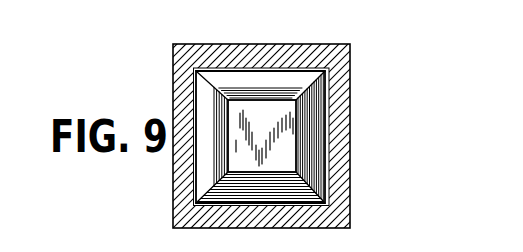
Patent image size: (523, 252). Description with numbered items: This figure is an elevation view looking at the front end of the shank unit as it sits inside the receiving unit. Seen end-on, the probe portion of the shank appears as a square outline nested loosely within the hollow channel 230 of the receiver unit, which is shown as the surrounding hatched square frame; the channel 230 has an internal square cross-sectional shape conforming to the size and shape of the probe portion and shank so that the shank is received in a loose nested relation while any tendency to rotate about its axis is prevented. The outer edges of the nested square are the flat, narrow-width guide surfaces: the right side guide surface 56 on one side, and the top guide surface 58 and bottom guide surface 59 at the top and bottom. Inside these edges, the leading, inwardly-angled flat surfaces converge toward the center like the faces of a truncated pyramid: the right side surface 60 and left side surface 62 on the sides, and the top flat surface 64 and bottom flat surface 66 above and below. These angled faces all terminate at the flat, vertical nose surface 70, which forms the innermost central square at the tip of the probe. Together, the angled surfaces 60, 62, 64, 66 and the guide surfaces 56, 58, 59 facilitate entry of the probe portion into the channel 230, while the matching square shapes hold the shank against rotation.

The right side guide surface 56 is at (200, 82).
The top guide surface 58 is at (243, 69).
The bottom guide surface 59 is at (254, 205).
The right side surface 60 is at (212, 117).
The left side surface 62 is at (304, 155).
The top flat surface 64 is at (275, 83).
The bottom flat surface 66 is at (283, 188).
The nose surface 70 is at (268, 125).
The hollow channel 230 is at (173, 185).